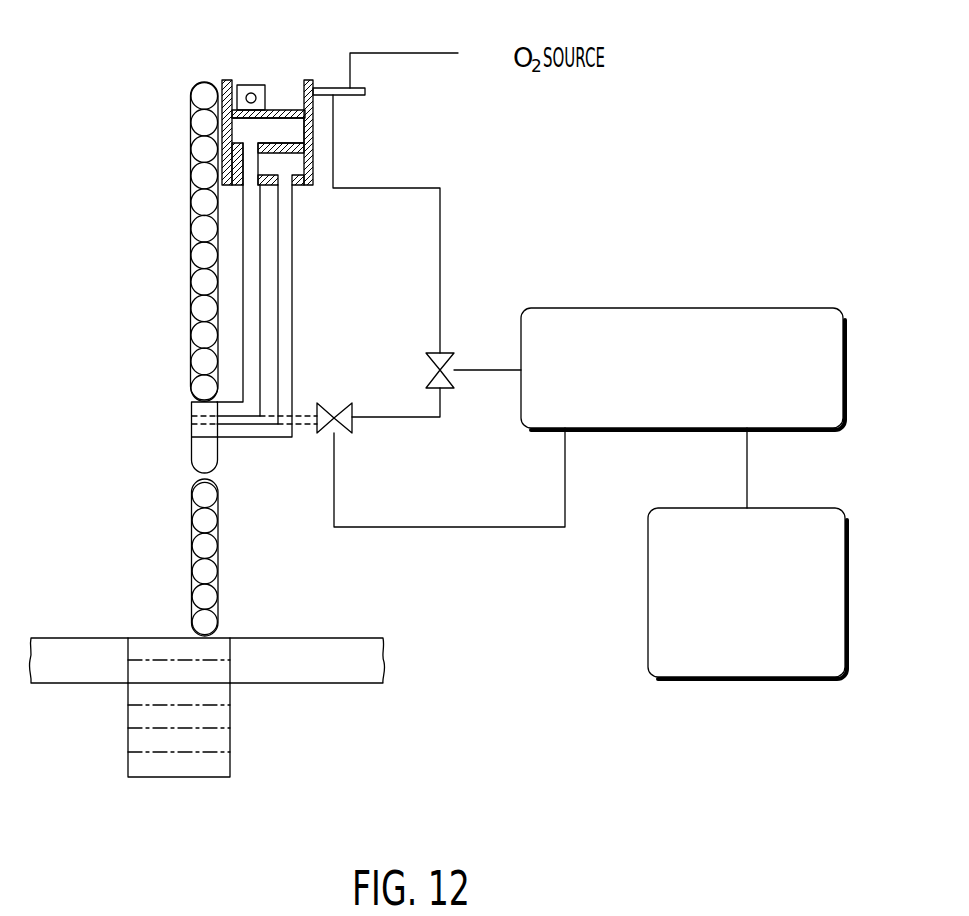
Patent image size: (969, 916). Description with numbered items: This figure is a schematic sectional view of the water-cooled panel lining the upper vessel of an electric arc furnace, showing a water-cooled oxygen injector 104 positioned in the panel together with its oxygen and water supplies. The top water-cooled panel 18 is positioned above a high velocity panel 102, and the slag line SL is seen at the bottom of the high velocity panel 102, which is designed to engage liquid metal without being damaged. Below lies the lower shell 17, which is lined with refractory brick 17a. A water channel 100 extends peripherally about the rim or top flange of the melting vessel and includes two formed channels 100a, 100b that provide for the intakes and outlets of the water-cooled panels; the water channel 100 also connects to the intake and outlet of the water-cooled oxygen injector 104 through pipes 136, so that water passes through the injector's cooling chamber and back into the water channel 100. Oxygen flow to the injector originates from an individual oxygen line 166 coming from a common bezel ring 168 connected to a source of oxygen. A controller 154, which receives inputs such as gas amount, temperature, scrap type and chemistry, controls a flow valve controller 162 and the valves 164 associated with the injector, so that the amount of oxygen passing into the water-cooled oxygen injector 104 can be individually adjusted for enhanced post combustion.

The water channel 100 is at (283, 88).
The bezel ring 168 is at (358, 88).
The formed channel 100a is at (287, 132).
The formed channel 100b is at (297, 165).
The oxygen line 166 is at (439, 279).
The pipes 136 is at (253, 278).
The water-cooled panel 18 is at (189, 273).
The water-cooled oxygen injector 104 is at (189, 410).
The high velocity panel 102 is at (191, 527).
The valve 164 is at (428, 362).
The flow valve controller 162 is at (587, 308).
The controller 154 is at (720, 678).
The slag line SL is at (98, 637).
The lower shell 17 is at (123, 687).
The brick 17a is at (217, 765).